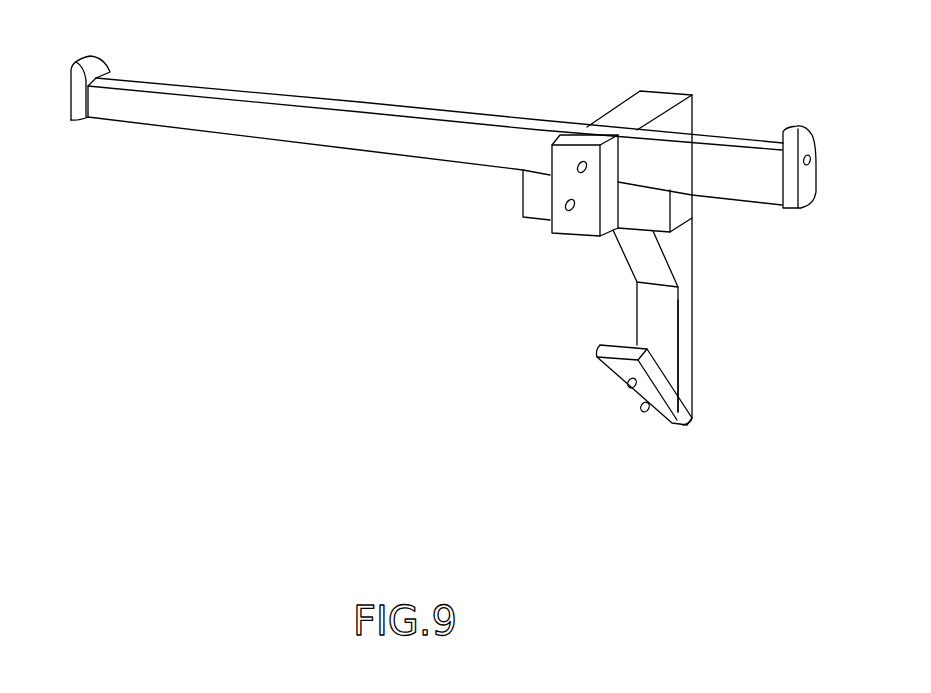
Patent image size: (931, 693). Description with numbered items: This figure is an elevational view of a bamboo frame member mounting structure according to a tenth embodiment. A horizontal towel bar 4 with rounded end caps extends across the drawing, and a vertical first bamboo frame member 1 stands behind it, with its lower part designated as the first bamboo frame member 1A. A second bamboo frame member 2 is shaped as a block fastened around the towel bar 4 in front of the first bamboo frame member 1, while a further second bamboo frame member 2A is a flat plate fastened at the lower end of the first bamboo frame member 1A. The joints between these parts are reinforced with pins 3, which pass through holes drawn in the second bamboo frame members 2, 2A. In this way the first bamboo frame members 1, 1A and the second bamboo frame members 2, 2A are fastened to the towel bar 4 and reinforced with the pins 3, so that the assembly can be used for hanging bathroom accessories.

The first bamboo frame member 1 is at (623, 112).
The first bamboo frame member 1A is at (675, 367).
The second bamboo frame member 2 is at (587, 230).
The second bamboo frame member 2A is at (630, 407).
The pin 3 is at (567, 205).
The towel bar 4 is at (483, 138).